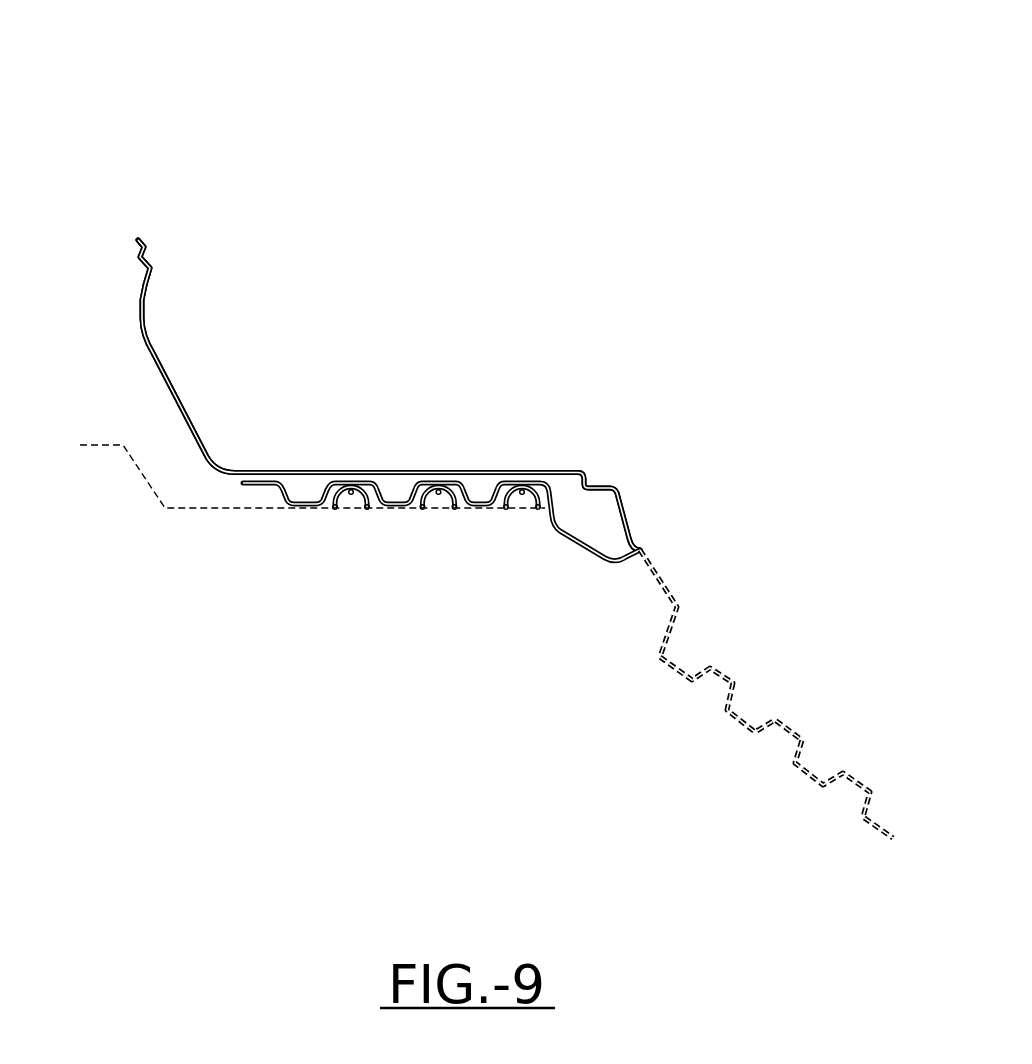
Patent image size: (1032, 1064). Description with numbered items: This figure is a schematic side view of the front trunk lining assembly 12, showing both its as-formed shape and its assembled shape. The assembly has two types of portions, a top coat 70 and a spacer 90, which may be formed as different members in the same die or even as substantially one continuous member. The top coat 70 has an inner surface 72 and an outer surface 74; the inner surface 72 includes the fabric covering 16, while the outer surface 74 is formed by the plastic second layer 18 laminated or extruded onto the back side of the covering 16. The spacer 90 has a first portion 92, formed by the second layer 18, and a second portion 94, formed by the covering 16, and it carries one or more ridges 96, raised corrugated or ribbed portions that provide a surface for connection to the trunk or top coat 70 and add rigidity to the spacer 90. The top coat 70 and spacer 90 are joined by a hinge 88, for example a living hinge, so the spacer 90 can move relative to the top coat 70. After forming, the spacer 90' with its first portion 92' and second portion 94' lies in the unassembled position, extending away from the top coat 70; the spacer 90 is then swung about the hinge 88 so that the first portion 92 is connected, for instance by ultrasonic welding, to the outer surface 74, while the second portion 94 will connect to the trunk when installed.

The front trunk lining assembly 12 is at (618, 172).
The covering 16 is at (417, 470).
The second layer 18 is at (167, 394).
The top coat 70 is at (485, 425).
The inner surface 72 is at (167, 363).
The outer surface 74 is at (144, 348).
The hinge 88 is at (638, 548).
The spacer 90 is at (312, 539).
The first portion 92 is at (426, 417).
The second portion 94 is at (503, 579).
The ridge 96 is at (390, 510).
The spacer 90' is at (785, 694).
The first portion 92' is at (695, 739).
The second portion 94' is at (815, 667).